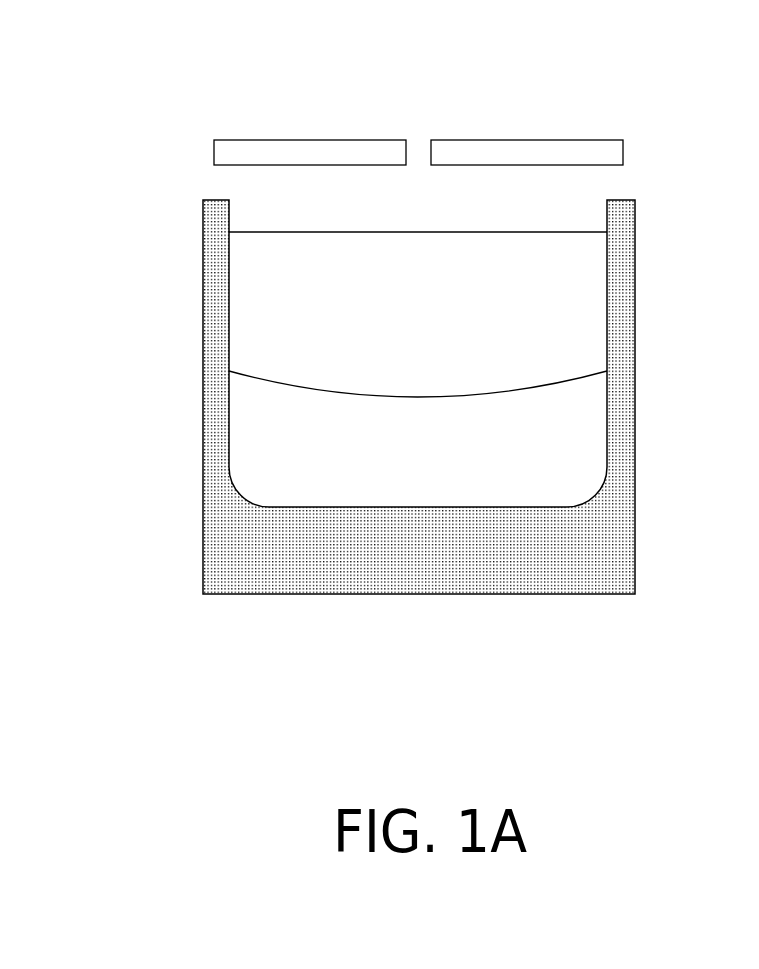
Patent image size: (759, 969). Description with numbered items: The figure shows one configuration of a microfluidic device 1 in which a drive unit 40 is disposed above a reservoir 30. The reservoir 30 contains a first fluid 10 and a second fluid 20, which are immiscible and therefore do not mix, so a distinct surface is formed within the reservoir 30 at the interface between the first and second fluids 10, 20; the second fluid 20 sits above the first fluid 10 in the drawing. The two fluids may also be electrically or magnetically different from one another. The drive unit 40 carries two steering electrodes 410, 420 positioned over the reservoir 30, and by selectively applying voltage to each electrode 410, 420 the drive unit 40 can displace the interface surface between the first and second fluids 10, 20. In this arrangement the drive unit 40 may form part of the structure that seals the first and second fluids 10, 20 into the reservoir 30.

The microfluidic device 1 is at (108, 55).
The first fluid 10 is at (573, 441).
The second fluid 20 is at (257, 308).
The reservoir 30 is at (220, 495).
The drive unit 40 is at (419, 134).
The steering electrode 410 is at (310, 169).
The steering electrode 420 is at (527, 169).